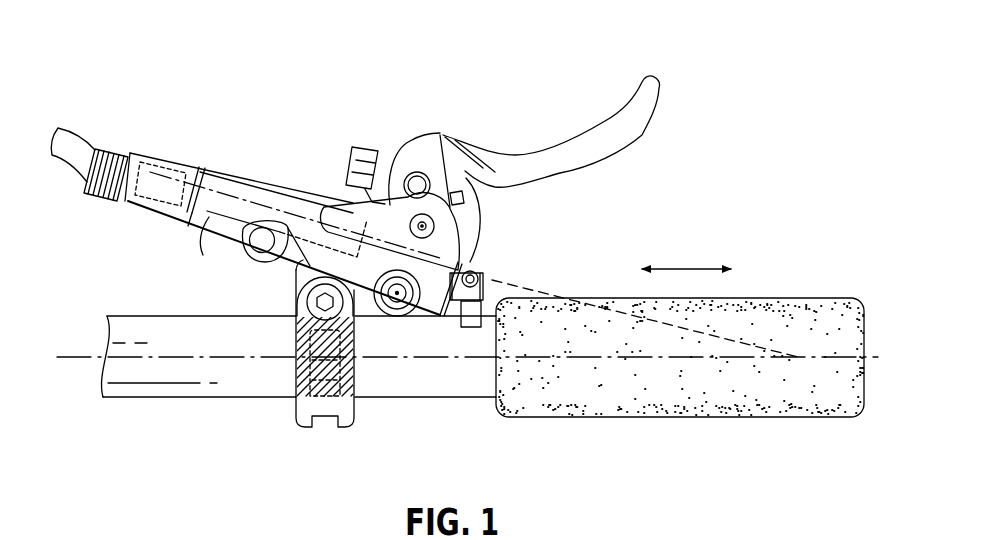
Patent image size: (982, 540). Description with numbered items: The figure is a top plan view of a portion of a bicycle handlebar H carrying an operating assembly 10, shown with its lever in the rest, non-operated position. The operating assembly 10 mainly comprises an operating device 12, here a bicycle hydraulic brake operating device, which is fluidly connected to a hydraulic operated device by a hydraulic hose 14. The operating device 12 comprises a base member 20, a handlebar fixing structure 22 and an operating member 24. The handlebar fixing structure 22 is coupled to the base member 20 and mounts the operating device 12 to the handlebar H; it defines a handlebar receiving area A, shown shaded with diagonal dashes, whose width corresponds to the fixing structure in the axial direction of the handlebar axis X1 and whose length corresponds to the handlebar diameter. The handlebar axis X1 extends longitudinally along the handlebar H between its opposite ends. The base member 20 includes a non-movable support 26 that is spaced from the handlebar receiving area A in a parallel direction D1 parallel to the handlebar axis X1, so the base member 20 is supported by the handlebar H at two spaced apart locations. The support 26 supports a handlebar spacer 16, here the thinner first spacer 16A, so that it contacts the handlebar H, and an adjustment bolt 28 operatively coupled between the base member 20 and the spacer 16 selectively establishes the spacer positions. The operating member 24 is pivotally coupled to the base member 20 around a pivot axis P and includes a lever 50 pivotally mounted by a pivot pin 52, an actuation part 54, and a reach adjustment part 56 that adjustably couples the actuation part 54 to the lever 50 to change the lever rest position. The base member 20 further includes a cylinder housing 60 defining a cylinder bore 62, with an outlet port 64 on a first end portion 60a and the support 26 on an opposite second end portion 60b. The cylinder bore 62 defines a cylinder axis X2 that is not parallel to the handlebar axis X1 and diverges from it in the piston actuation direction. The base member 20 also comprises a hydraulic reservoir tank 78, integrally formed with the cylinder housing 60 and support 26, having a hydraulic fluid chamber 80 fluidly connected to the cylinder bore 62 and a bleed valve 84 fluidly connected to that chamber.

The operating assembly 10 is at (194, 70).
The operating device 12 is at (243, 156).
The hydraulic hose 14 is at (88, 149).
The handlebar spacer 16 is at (467, 332).
The first spacer 16A is at (483, 318).
The base member 20 is at (345, 197).
The handlebar fixing structure 22 is at (351, 368).
The operating member 24 is at (556, 133).
The support 26 is at (488, 283).
The adjustment bolt 28 is at (478, 274).
The lever 50 is at (598, 160).
The pivot pin 52 is at (426, 213).
The actuation part 54 is at (468, 240).
The reach adjustment part 56 is at (368, 144).
The cylinder housing 60 is at (266, 179).
The first end portion 60a is at (204, 230).
The second end portion 60b is at (389, 153).
The cylinder bore 62 is at (201, 184).
The outlet port 64 is at (187, 227).
The hydraulic reservoir tank 78 is at (255, 252).
The hydraulic fluid chamber 80 is at (293, 290).
The bleed valve 84 is at (394, 302).
The handlebar receiving area A is at (342, 378).
The handlebar H is at (143, 399).
The pivot axis P is at (427, 225).
The handlebar axis X1 is at (78, 352).
The cylinder axis X2 is at (157, 183).
The parallel direction D1 is at (689, 267).